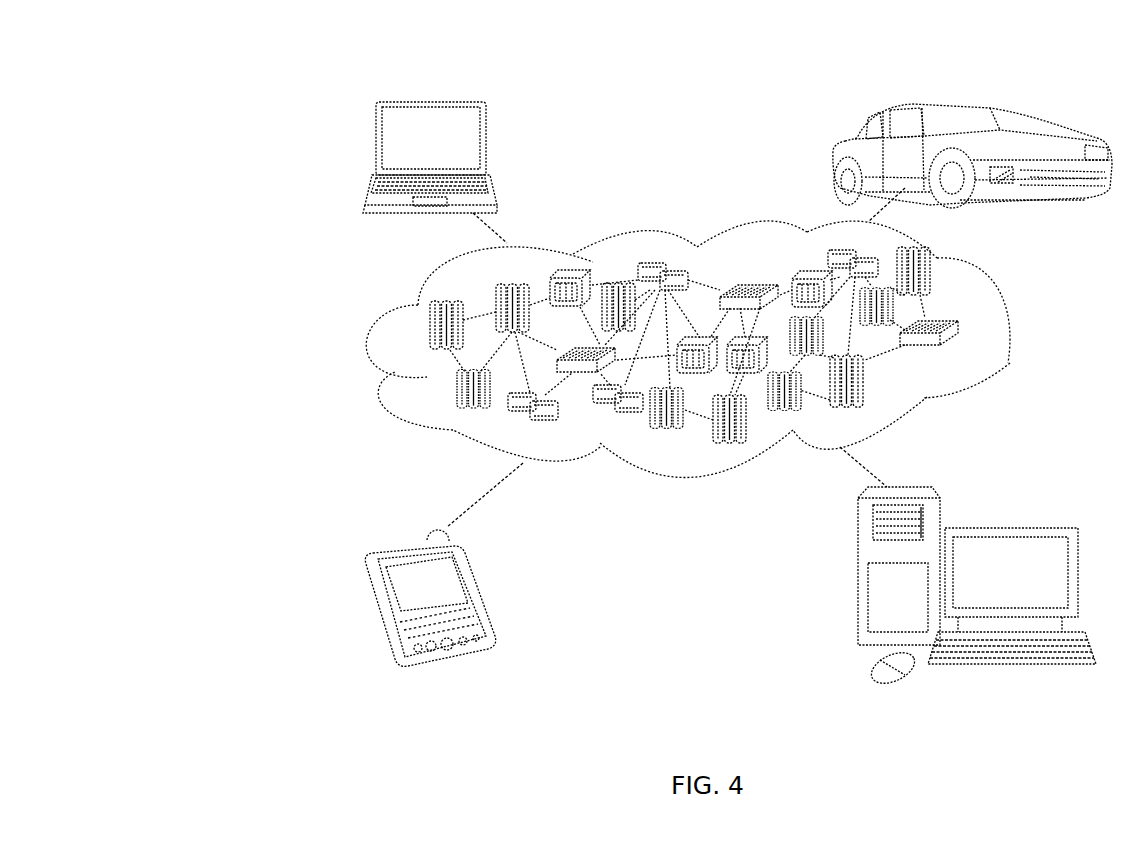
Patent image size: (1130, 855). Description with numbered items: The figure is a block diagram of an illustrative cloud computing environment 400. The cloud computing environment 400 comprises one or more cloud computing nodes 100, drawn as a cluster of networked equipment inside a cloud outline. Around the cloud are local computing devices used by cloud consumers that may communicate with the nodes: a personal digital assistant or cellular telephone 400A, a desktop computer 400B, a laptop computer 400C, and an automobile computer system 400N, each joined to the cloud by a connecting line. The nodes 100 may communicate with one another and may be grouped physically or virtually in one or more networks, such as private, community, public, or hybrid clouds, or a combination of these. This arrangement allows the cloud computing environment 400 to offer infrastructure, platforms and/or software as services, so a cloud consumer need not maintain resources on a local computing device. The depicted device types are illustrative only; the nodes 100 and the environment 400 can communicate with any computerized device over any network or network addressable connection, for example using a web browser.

The cloud computing environment 400 is at (268, 47).
The cloud computing nodes 100 is at (966, 354).
The personal digital assistant (PDA) or cellular telephone 400A is at (485, 592).
The desktop computer 400B is at (1009, 526).
The laptop computer 400C is at (488, 145).
The automobile computer system 400N is at (836, 157).